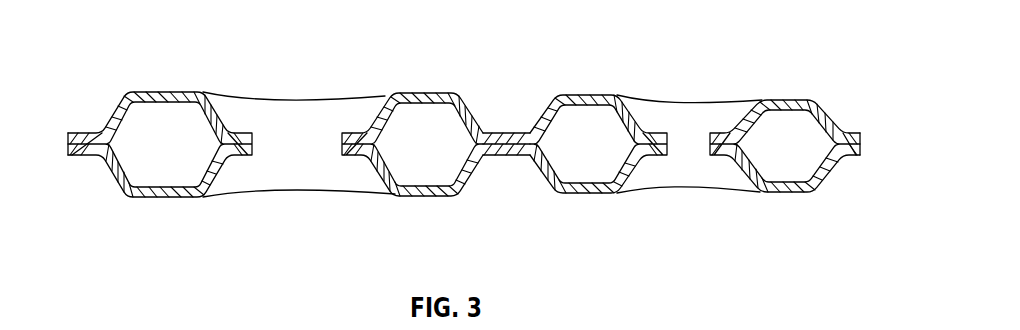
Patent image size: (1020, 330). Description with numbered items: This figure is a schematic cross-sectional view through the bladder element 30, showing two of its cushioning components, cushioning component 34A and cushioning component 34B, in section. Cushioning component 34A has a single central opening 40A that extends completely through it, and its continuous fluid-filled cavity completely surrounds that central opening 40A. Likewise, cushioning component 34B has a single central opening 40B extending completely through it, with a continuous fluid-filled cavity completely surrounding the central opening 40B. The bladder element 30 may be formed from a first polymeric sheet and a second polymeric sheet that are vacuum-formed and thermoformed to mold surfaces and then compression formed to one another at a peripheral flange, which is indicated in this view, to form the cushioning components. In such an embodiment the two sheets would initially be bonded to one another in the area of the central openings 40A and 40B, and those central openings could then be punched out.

The bladder element 30 is at (650, 48).
The cushioning component 34A is at (785, 100).
The cushioning component 34B is at (160, 89).
The central opening 40A is at (659, 178).
The central opening 40B is at (320, 115).